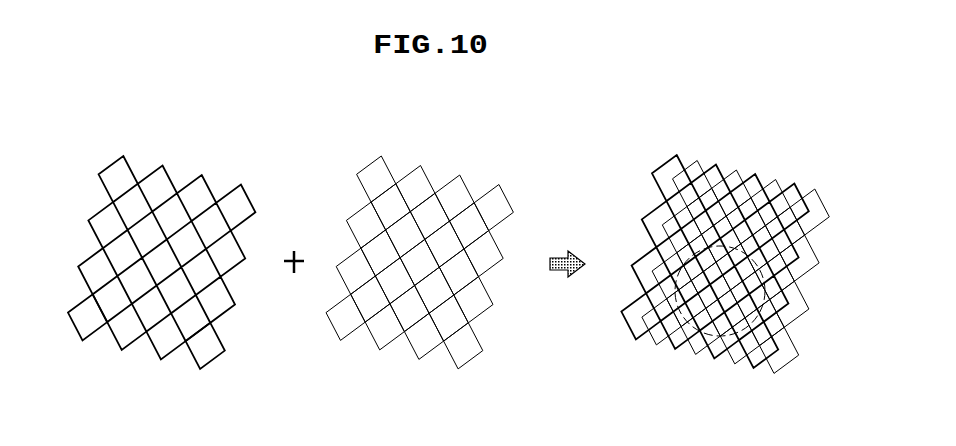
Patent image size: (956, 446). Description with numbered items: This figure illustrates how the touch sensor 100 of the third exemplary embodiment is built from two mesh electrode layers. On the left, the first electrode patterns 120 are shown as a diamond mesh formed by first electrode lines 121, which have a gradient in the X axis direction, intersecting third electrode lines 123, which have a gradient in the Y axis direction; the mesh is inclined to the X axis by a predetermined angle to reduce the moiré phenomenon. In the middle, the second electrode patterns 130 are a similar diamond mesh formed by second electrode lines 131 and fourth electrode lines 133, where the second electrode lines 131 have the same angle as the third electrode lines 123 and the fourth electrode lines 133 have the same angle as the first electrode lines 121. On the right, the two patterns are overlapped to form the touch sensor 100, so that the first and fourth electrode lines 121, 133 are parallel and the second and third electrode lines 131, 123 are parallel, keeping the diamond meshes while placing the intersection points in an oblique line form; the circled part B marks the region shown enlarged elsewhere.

The first electrode patterns 120 is at (161, 256).
The first electrode lines 121 is at (178, 346).
The third electrode lines 123 is at (97, 330).
The second electrode patterns 130 is at (419, 255).
The second electrode lines 131 is at (356, 330).
The fourth electrode lines 133 is at (436, 347).
The touch sensor 100 is at (725, 254).
The part B is at (700, 336).